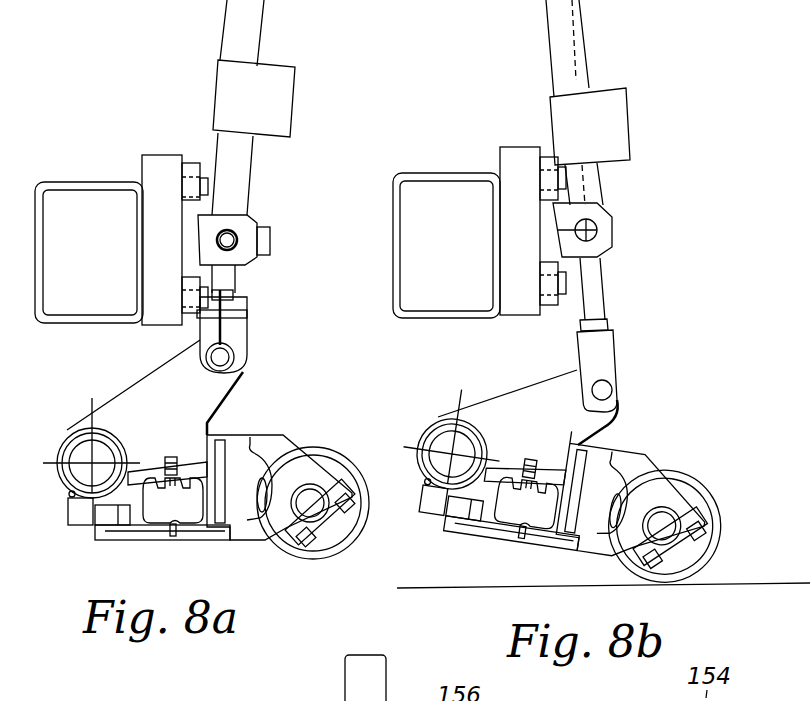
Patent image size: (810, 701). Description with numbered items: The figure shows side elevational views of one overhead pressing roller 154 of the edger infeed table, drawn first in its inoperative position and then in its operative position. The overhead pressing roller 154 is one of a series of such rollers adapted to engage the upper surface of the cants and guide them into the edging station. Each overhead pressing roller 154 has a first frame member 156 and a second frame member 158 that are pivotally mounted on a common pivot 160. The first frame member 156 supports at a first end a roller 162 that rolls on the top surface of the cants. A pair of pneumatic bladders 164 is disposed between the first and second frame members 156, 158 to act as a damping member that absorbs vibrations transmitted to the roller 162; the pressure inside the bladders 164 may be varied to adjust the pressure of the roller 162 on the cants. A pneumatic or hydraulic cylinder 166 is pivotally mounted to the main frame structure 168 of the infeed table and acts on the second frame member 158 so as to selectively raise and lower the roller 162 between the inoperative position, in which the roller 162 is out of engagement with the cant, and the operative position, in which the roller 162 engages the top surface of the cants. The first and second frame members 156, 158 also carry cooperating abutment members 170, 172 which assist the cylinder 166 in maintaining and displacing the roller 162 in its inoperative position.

In FIG. 8A, the overhead pressing roller 154 is at (322, 207).
In FIG. 8B, the overhead pressing roller 154 is at (679, 100).
In FIG. 8A, the first frame member 156 is at (273, 447).
In FIG. 8B, the first frame member 156 is at (637, 460).
In FIG. 8A, the second frame member 158 is at (140, 398).
In FIG. 8B, the second frame member 158 is at (508, 410).
In FIG. 8A, the common pivot 160 is at (92, 463).
In FIG. 8B, the common pivot 160 is at (452, 454).
In FIG. 8A, the roller 162 is at (335, 455).
In FIG. 8B, the roller 162 is at (695, 487).
In FIG. 8A, the pneumatic bladders 164 is at (180, 508).
In FIG. 8B, the pneumatic bladders 164 is at (530, 502).
In FIG. 8A, the pneumatic or hydraulic cylinder 166 is at (233, 183).
In FIG. 8B, the pneumatic or hydraulic cylinder 166 is at (563, 62).
In FIG. 8A, the main frame structure 168 is at (92, 182).
In FIG. 8B, the main frame structure 168 is at (440, 178).
In FIG. 8A, the abutment member 170 is at (107, 518).
In FIG. 8B, the abutment member 170 is at (455, 512).
In FIG. 8A, the abutment member 172 is at (68, 518).
In FIG. 8B, the abutment member 172 is at (422, 506).